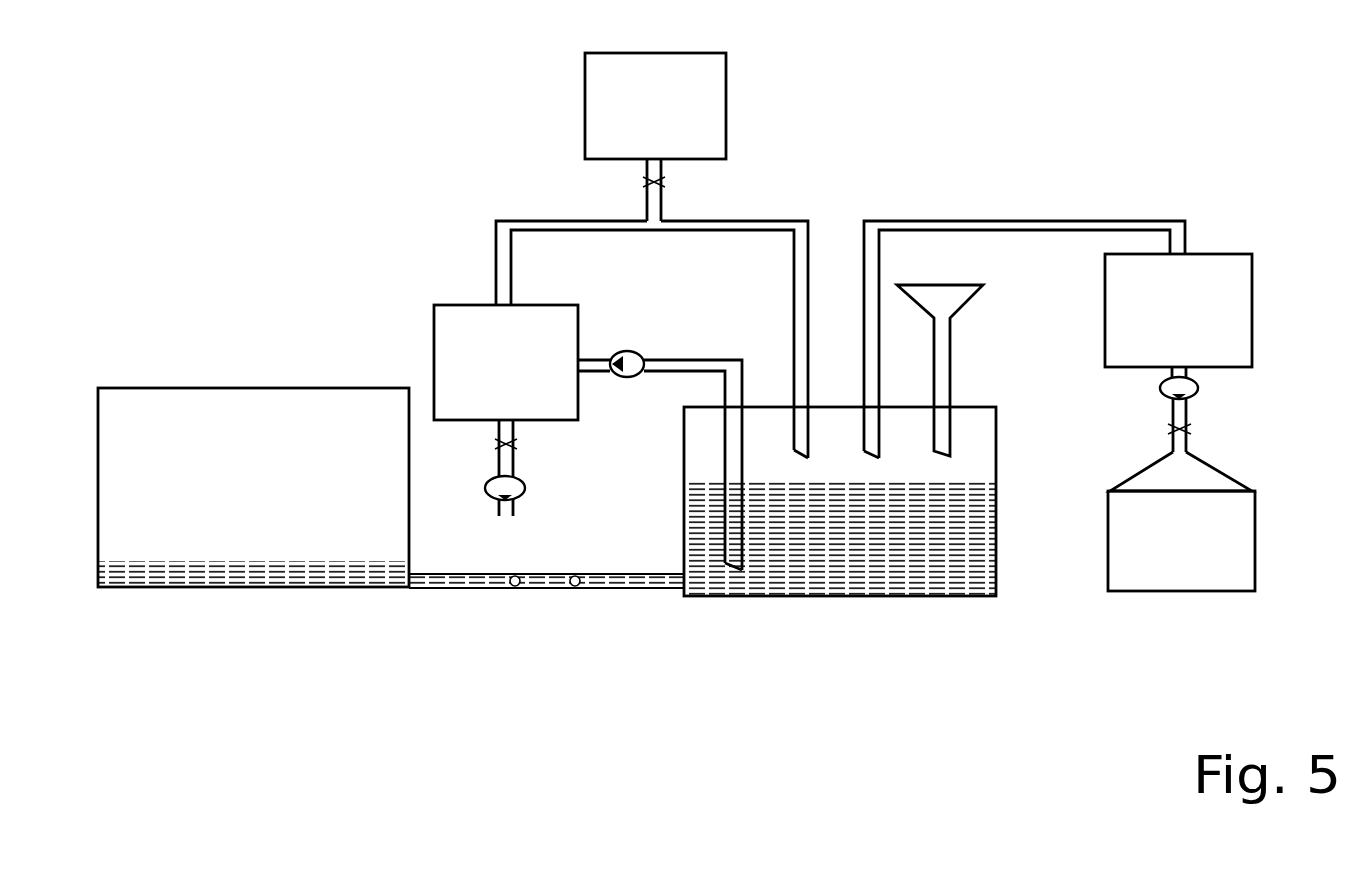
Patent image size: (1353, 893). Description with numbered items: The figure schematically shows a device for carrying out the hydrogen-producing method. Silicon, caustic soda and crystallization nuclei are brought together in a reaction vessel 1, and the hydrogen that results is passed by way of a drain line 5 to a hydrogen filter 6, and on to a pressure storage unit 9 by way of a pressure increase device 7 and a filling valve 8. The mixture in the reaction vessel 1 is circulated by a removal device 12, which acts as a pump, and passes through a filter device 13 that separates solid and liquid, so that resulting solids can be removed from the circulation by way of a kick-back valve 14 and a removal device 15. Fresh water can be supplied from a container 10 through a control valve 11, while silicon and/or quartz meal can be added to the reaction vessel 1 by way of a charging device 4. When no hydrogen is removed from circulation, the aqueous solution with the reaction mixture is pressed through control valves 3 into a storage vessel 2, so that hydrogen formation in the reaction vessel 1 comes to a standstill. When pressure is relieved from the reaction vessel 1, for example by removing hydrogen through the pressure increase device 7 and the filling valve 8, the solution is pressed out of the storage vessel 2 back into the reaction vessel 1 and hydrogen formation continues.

The reaction vessel 1 is at (838, 590).
The storage vessel 2 is at (213, 579).
The control valves 3 is at (567, 578).
The charging device 4 is at (968, 288).
The drain line 5 is at (1034, 213).
The hydrogen filter 6 is at (1244, 288).
The pressure increase device 7 is at (1191, 379).
The filling valve 8 is at (1183, 421).
The pressure storage unit 9 is at (1247, 549).
The container 10 is at (718, 69).
The control valve 11 is at (658, 174).
The removal device 12 is at (622, 340).
The filter device 13 is at (426, 297).
The kick-back valve 14 is at (509, 436).
The removal device 15 is at (515, 487).